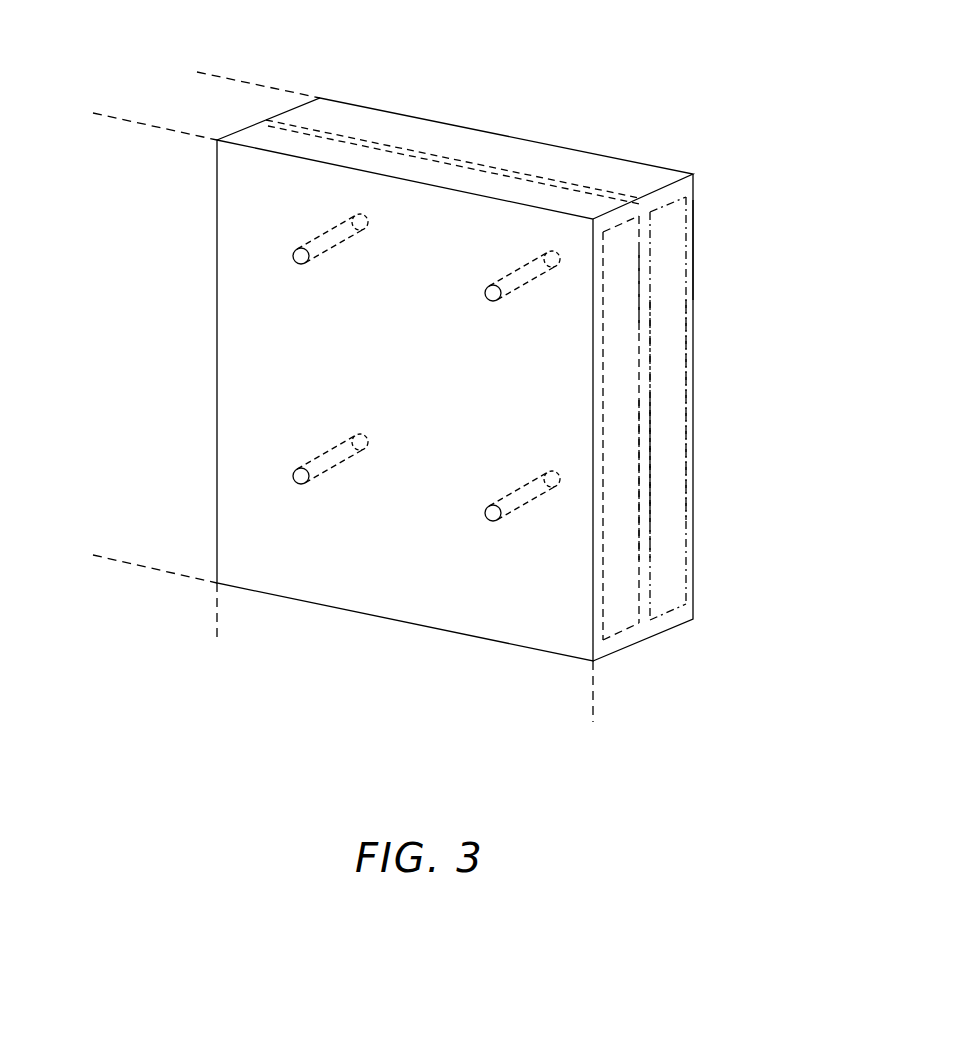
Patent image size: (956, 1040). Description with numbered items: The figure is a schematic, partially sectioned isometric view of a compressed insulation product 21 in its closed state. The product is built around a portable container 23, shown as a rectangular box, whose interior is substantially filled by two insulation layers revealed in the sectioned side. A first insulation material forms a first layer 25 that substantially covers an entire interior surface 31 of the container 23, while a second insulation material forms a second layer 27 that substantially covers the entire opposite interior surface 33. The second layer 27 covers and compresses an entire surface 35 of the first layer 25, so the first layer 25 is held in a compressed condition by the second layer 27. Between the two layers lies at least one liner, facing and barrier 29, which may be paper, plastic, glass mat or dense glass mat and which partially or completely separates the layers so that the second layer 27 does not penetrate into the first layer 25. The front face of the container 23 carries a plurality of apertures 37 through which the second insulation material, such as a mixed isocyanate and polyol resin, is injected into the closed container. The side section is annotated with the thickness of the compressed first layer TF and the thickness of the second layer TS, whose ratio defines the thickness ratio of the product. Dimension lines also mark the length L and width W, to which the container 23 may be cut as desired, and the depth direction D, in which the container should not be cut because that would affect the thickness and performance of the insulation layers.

The insulation product 21 is at (727, 75).
The container 23 is at (397, 113).
The first layer 25 is at (622, 623).
The second layer 27 is at (663, 602).
The liner, facing and barrier 29 is at (643, 435).
The interior surface 31 is at (603, 445).
The opposite interior surface 33 is at (685, 500).
The surface of the first layer 35 is at (640, 553).
The aperture 37 is at (302, 264).
The thickness of the second layer TS is at (555, 328).
The thickness of the compressed first layer TF is at (608, 283).
The length L is at (143, 125).
The width W is at (593, 695).
The depth direction D is at (223, 78).